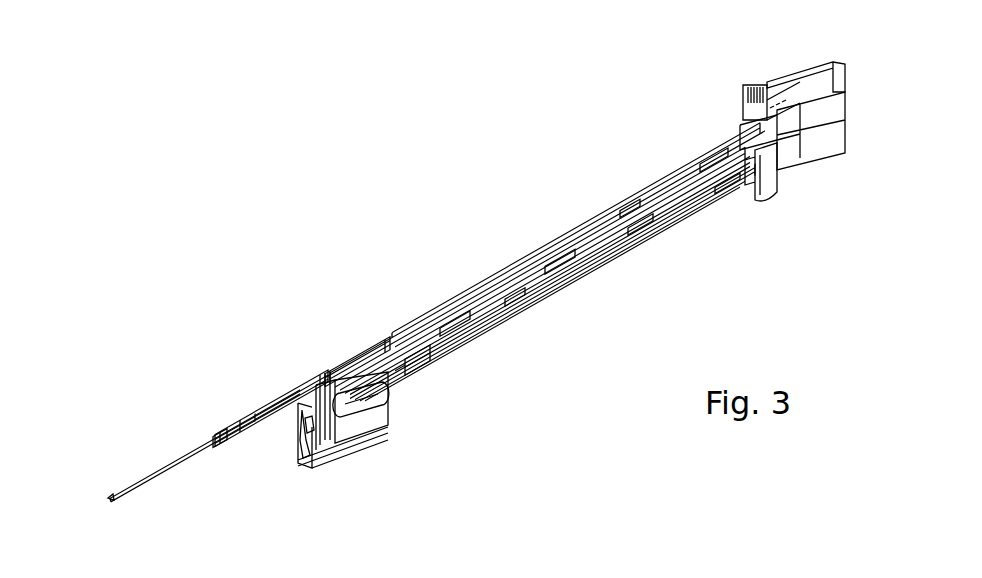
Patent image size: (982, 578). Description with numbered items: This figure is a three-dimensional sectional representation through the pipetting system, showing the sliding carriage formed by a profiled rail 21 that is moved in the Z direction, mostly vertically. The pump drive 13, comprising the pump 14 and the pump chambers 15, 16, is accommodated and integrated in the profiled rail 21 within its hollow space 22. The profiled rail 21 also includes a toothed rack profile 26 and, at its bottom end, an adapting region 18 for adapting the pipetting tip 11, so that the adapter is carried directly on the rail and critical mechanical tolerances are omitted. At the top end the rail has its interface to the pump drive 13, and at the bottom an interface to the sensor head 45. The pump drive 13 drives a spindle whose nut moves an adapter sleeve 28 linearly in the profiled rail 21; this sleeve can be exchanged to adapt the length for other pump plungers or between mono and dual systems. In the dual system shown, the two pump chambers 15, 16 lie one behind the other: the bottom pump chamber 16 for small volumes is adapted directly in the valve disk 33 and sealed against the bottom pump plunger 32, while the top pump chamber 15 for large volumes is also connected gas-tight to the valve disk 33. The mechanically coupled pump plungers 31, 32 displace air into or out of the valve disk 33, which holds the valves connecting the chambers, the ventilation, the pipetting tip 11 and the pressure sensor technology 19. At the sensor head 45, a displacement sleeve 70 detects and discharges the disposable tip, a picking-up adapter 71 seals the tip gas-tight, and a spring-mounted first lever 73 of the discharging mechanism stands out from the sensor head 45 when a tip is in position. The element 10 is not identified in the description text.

The needle 10 is at (195, 445).
The pipetting tip 11 is at (110, 500).
The pump drive 13 is at (812, 76).
The pump 14 is at (817, 128).
The pump chamber 15 is at (524, 283).
The pump chamber 16 is at (450, 347).
The adapting region 18 is at (331, 365).
The pressure sensor technology 19 is at (353, 430).
The profiled rail 21 is at (558, 228).
The hollow space 22 is at (609, 228).
The toothed rack profile 26 is at (542, 298).
The adapter sleeve 28 is at (740, 185).
The pump plunger 31 is at (648, 232).
The pump plunger 32 is at (487, 302).
The valve disk 33 is at (367, 418).
The sensor head 45 is at (338, 443).
The displacement sleeve 70 is at (270, 397).
The picking-up adapter 71 is at (204, 437).
The first lever 73 is at (298, 425).